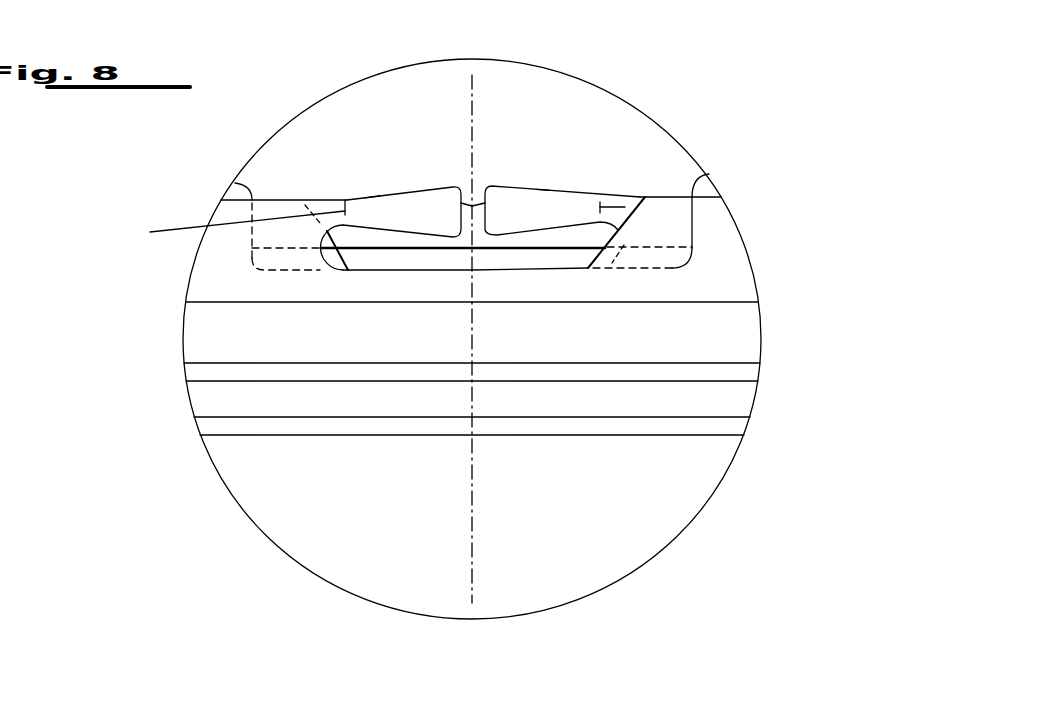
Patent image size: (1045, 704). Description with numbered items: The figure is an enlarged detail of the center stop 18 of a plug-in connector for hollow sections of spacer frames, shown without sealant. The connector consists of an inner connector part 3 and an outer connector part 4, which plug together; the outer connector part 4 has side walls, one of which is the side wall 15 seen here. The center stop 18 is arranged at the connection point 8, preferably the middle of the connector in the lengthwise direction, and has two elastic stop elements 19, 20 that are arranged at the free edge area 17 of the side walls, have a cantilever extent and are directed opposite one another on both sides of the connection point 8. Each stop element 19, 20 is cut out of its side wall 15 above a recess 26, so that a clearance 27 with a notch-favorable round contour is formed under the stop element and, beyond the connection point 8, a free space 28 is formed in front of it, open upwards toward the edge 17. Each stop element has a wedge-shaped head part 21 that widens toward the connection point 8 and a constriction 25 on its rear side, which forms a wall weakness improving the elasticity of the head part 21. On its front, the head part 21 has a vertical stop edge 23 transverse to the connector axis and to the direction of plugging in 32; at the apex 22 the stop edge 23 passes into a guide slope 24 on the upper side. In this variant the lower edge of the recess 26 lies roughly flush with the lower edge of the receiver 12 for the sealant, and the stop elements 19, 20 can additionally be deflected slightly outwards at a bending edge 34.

The inner connector part 3 is at (235, 187).
The outer connector part 4 is at (745, 330).
The connection point 8 is at (472, 492).
The receiver 12 is at (472, 320).
The side wall 15 is at (222, 400).
The edge area 17 is at (306, 200).
The center stop 18 is at (512, 113).
The stop element 19 is at (430, 212).
The stop element 20 is at (497, 212).
The head part 21 is at (410, 202).
The apex 22 is at (455, 185).
The stop edge 23 is at (483, 186).
The guide slope 24 is at (372, 196).
The constriction 25 is at (582, 208).
The recess 26 is at (452, 272).
The clearance 27 is at (334, 258).
The free space 28 is at (590, 233).
The direction of plugging in 32 is at (723, 115).
The bending edge 34 is at (650, 160).